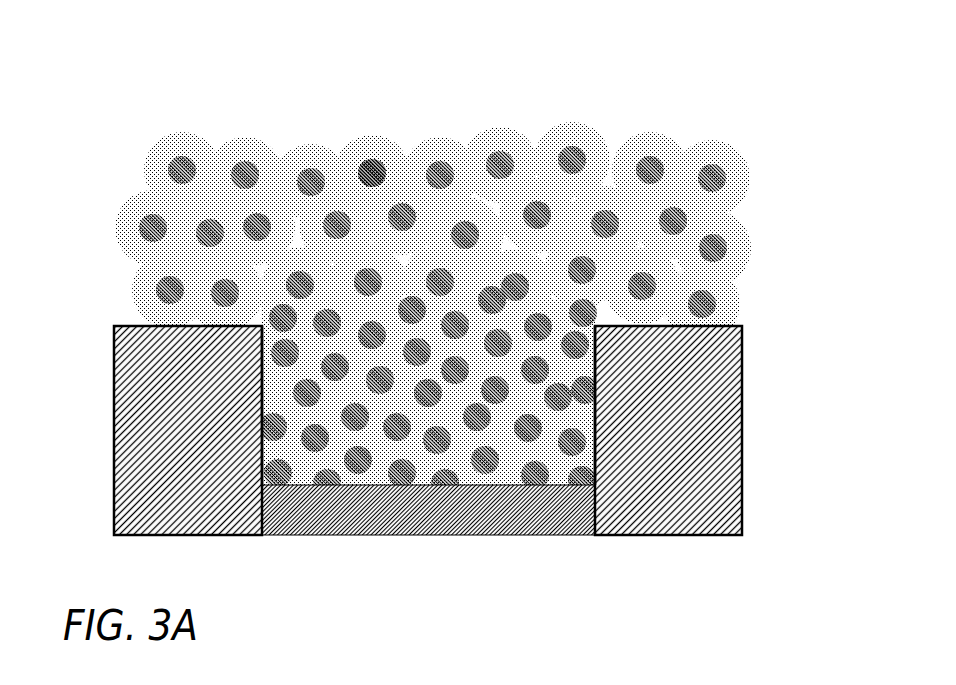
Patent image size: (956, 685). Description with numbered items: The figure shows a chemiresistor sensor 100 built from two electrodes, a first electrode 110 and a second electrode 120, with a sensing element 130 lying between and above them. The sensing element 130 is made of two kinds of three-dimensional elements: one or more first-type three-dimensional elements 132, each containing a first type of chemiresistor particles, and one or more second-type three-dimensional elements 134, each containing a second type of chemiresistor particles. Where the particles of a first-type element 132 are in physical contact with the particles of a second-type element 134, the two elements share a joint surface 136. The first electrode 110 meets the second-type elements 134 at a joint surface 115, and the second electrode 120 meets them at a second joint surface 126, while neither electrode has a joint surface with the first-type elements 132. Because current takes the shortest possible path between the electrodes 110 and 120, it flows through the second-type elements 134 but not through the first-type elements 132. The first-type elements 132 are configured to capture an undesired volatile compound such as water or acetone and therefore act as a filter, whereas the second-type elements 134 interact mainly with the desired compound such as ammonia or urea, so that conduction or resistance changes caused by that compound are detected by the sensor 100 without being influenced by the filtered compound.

The chemiresistor sensor 100 is at (172, 105).
The first electrode 110 is at (685, 457).
The second electrode interface 115 is at (597, 357).
The second electrode 120 is at (170, 467).
The second joint surface 126 is at (262, 367).
The sensing element 130 is at (385, 195).
The first type of 3D elements 132 is at (480, 180).
The second type of 3D elements 134 is at (390, 397).
The joint surface 136 is at (363, 310).